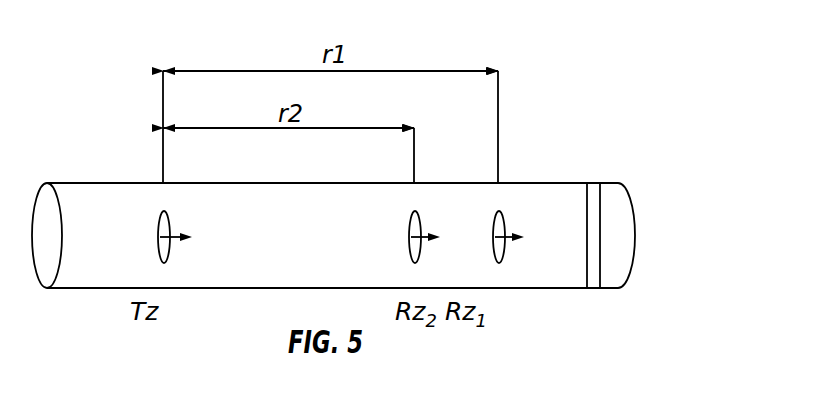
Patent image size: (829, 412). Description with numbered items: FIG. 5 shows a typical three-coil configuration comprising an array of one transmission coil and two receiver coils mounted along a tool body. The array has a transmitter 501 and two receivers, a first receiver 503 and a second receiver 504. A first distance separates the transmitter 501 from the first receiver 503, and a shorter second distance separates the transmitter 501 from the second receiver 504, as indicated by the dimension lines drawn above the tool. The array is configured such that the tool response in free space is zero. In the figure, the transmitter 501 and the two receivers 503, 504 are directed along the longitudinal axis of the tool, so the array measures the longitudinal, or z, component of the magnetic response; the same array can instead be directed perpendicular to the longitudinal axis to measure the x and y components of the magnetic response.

The transmitter 501 is at (165, 258).
The receiver 504 is at (416, 258).
The receiver 503 is at (500, 258).